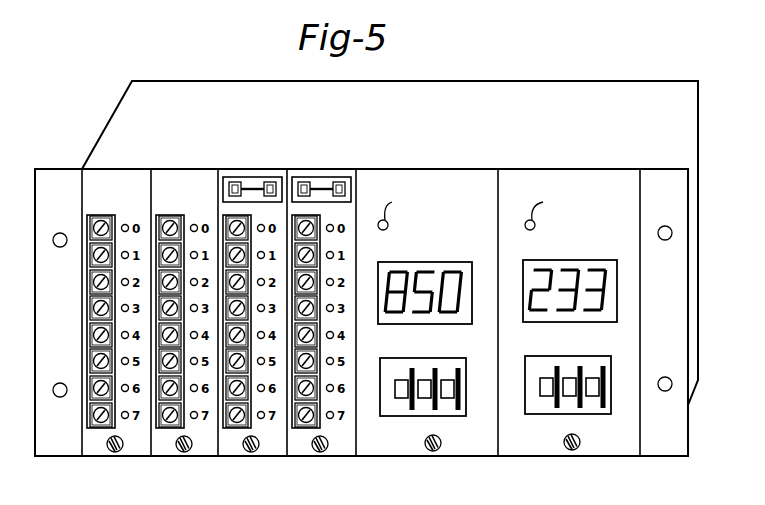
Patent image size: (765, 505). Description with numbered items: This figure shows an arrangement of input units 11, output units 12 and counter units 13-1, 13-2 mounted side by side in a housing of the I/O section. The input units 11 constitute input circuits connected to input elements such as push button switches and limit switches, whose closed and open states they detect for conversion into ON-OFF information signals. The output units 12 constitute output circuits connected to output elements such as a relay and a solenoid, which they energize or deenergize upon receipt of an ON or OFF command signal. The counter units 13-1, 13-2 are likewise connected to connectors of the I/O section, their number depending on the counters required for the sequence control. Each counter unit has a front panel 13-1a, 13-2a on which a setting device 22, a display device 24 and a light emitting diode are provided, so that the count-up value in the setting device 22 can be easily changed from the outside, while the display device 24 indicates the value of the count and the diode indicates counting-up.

The input unit 11 is at (130, 180).
The output unit 12 is at (282, 172).
The counter unit 13-2 is at (446, 288).
The counter unit 13-1 is at (599, 288).
The display device 24 is at (460, 265).
The setting device 22 is at (456, 363).
The front panel 13-2a is at (466, 447).
The front panel 13-1a is at (603, 447).